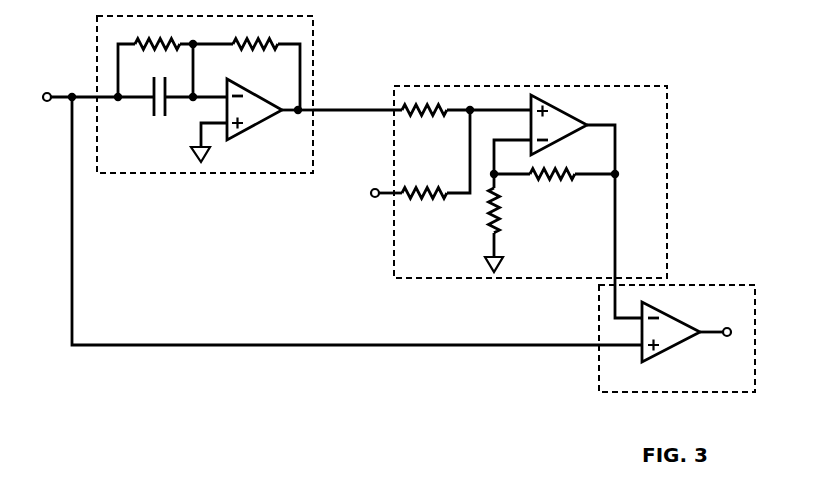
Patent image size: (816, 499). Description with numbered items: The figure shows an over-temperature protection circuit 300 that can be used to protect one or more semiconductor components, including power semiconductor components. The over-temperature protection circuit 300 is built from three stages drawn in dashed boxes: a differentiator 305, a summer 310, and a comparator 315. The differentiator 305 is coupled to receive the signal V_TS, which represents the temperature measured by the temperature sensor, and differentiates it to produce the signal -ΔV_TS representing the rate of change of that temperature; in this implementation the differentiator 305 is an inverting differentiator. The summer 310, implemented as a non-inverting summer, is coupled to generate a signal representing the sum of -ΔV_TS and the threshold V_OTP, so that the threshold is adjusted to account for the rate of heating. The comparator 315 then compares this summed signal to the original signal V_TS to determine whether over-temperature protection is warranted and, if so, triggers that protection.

The over-temperature protection circuit 300 is at (687, 68).
The differentiator 305 is at (95, 48).
The summer 310 is at (565, 83).
The comparator 315 is at (720, 283).